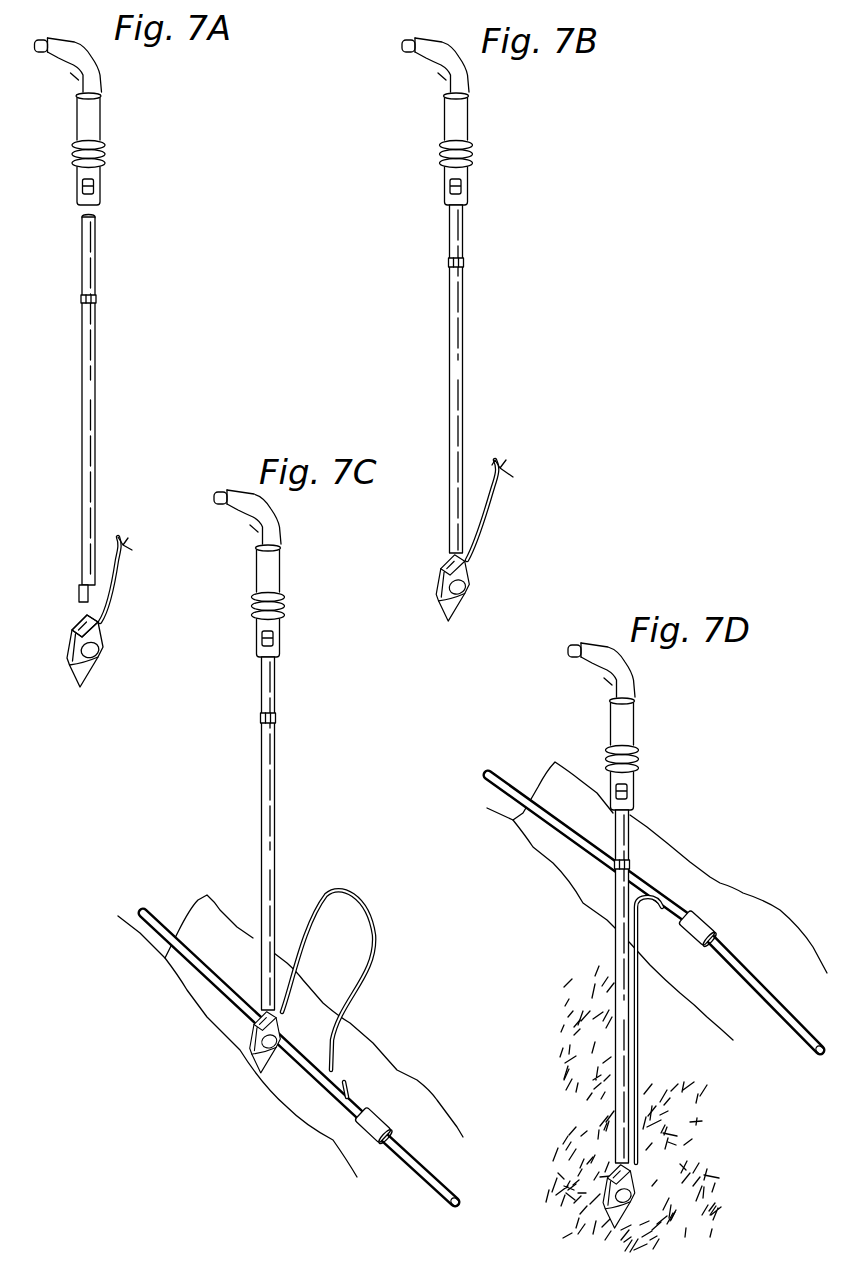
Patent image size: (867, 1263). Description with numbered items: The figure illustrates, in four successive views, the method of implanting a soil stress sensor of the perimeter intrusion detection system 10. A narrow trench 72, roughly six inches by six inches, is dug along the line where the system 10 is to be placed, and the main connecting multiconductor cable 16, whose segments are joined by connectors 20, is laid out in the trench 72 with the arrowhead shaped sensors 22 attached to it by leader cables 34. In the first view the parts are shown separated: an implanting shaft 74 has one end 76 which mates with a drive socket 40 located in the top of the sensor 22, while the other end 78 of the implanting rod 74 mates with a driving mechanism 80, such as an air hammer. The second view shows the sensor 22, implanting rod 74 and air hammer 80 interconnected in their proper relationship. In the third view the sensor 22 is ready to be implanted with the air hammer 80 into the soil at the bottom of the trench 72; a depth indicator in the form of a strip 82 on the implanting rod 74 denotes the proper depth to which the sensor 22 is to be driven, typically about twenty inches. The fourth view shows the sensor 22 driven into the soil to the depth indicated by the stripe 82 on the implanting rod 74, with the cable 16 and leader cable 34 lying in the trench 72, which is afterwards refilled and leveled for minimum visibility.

In FIG. 7C, the perimeter intrusion detection system 10 is at (292, 892).
In FIG. 7D, the perimeter intrusion detection system 10 is at (657, 807).
In FIG. 7C, the multiconductor cable 16 is at (372, 1043).
In FIG. 7D, the multiconductor cable 16 is at (763, 990).
In FIG. 7C, the connector 20 is at (363, 1127).
In FIG. 7D, the connector 20 is at (700, 937).
In FIG. 7A, the soil stress sensor 22 is at (92, 668).
In FIG. 7B, the soil stress sensor 22 is at (460, 600).
In FIG. 7C, the soil stress sensor 22 is at (247, 1037).
In FIG. 7D, the soil stress sensor 22 is at (640, 1192).
In FIG. 7A, the leader cable 34 is at (115, 597).
In FIG. 7B, the leader cable 34 is at (490, 520).
In FIG. 7C, the leader cable 34 is at (350, 897).
In FIG. 7D, the leader cable 34 is at (705, 880).
In FIG. 7A, the drive socket 40 is at (80, 620).
In FIG. 7C, the trench 72 is at (403, 1088).
In FIG. 7D, the trench 72 is at (743, 927).
In FIG. 7A, the implanting shaft 74 is at (82, 457).
In FIG. 7B, the implanting shaft 74 is at (453, 390).
In FIG. 7D, the implanting shaft 74 is at (617, 960).
In FIG. 7A, the end of implanting shaft 76 is at (80, 593).
In FIG. 7A, the other end of implanting rod 78 is at (81, 216).
In FIG. 7A, the driving mechanism 80 is at (93, 125).
In FIG. 7B, the driving mechanism 80 is at (457, 123).
In FIG. 7C, the driving mechanism 80 is at (270, 572).
In FIG. 7D, the driving mechanism 80 is at (623, 728).
In FIG. 7A, the depth indicator strip 82 is at (96, 301).
In FIG. 7B, the depth indicator strip 82 is at (450, 260).
In FIG. 7C, the depth indicator strip 82 is at (262, 717).
In FIG. 7D, the depth indicator strip 82 is at (629, 863).